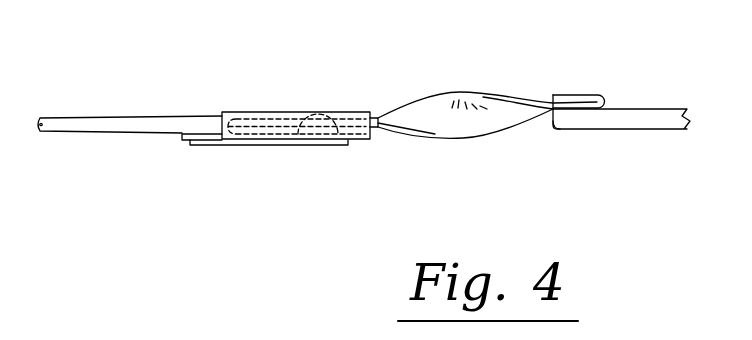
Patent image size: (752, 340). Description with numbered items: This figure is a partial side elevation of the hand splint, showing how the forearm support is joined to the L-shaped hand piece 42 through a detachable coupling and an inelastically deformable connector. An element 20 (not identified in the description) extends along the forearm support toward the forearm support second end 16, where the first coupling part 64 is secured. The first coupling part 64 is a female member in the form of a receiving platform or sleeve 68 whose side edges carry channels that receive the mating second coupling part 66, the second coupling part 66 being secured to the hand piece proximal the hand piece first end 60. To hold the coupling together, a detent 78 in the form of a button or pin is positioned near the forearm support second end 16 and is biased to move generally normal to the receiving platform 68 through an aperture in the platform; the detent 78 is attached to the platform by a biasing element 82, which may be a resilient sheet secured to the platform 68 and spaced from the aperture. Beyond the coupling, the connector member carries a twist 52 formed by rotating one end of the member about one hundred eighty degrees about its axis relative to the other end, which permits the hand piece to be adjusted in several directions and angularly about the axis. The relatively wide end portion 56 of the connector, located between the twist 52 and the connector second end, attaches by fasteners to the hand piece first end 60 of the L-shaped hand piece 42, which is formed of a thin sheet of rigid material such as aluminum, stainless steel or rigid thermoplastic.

The elongate tubular member 20 is at (57, 118).
The first coupling part 64 is at (260, 112).
The second coupling part 66 is at (273, 118).
The detent 78 is at (322, 113).
The receiving platform 68 is at (186, 139).
The biasing element 82 is at (214, 144).
The forearm support second end 16 is at (375, 131).
The twist 52 is at (457, 92).
The end portion 56 is at (580, 95).
The hand piece first end 60 is at (552, 130).
The L-shaped hand piece 42 is at (648, 131).